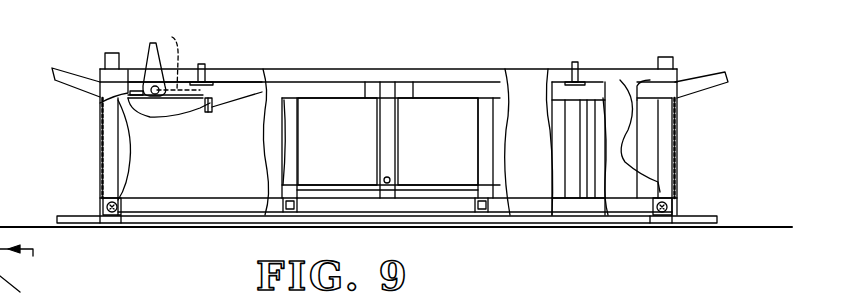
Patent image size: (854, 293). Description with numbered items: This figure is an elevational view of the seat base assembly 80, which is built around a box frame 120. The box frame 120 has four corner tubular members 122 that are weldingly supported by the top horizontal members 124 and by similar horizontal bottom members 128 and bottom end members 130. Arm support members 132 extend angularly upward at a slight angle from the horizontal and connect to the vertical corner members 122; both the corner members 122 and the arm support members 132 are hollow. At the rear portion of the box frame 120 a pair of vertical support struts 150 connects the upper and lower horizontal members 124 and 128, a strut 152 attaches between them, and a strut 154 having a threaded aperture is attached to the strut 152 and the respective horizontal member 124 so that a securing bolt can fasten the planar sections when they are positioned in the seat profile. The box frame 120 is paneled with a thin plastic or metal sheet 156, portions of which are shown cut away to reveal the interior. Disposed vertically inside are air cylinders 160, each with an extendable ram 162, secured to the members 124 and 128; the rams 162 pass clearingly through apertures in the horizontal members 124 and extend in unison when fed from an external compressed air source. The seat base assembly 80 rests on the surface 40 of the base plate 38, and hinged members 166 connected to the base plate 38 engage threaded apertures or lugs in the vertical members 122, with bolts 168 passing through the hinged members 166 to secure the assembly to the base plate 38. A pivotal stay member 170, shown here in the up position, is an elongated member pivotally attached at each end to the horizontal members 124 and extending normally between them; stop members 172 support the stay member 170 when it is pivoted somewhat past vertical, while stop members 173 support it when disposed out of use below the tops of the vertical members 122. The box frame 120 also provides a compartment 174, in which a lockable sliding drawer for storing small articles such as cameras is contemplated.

The base plate 38 is at (395, 222).
The surface 40 is at (506, 218).
The seat base assembly 80 is at (600, 46).
The box frame 120 is at (452, 90).
The corner tubular members 122 is at (110, 143).
The top horizontal members 124 is at (335, 90).
The horizontal bottom members 128 is at (440, 193).
The bottom end members 130 is at (98, 205).
The arm support members 132 is at (67, 70).
The vertical support struts 150 is at (297, 121).
The strut 152 is at (453, 193).
The strut 154 is at (386, 170).
The sheet 156 is at (100, 120).
The air cylinders 160 is at (207, 110).
The extendable ram 162 is at (203, 64).
The hinged members 166 is at (120, 207).
The bolts 168 is at (110, 224).
The pivotal stay member 170 is at (172, 38).
The stop members 172 is at (100, 100).
The stop members 173 is at (193, 117).
The compartment 174 is at (265, 162).